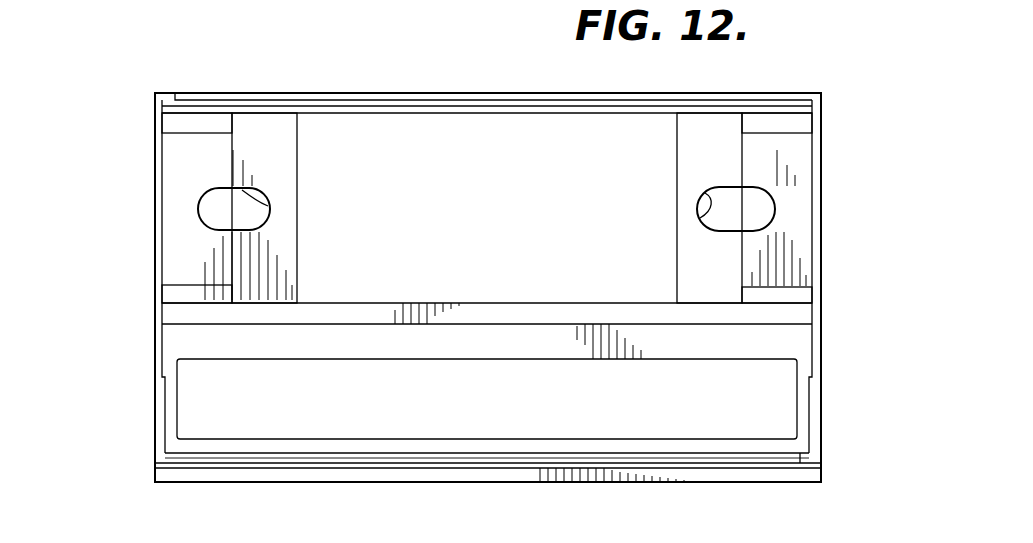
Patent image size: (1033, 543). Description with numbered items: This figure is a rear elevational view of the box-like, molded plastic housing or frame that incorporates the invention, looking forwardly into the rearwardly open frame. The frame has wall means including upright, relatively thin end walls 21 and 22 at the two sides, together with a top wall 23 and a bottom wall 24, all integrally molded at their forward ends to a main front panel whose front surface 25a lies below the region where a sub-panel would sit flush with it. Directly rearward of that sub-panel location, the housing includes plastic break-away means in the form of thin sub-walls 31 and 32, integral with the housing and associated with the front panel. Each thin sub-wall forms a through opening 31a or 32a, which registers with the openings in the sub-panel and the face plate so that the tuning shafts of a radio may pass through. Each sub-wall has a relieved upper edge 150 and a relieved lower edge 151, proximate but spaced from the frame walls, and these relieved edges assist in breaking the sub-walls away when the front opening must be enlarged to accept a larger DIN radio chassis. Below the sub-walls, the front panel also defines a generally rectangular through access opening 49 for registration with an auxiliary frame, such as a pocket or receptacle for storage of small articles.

The end wall 21 is at (821, 236).
The end wall 22 is at (155, 243).
The top wall 23 is at (400, 105).
The bottom wall 24 is at (537, 484).
The front surface of main front panel 25a is at (376, 444).
The sub-wall 31 is at (284, 148).
The through opening 31a is at (270, 204).
The sub-wall 32 is at (688, 158).
The through opening 32a is at (700, 218).
The access opening 49 is at (487, 371).
The relieved upper edge 150 is at (180, 133).
The relieved lower edge 151 is at (180, 285).